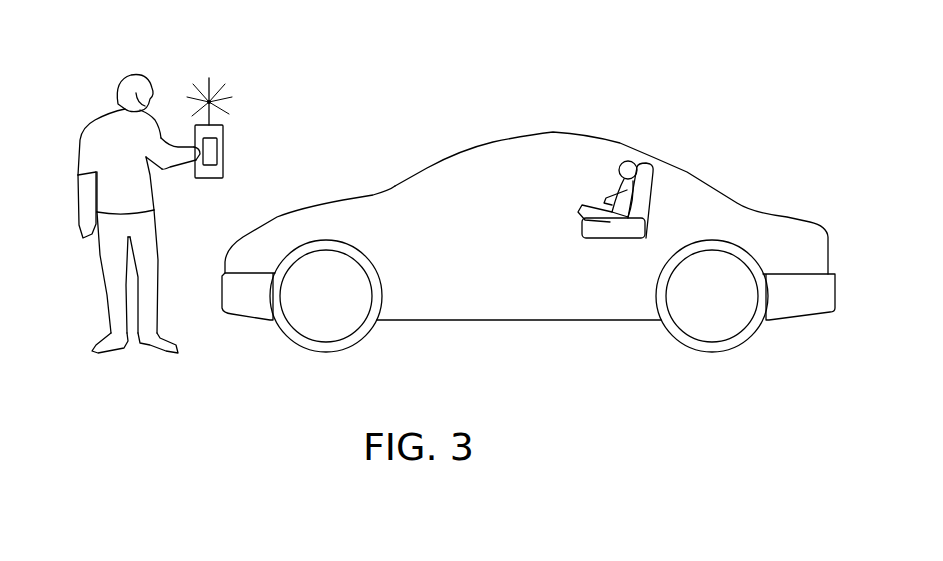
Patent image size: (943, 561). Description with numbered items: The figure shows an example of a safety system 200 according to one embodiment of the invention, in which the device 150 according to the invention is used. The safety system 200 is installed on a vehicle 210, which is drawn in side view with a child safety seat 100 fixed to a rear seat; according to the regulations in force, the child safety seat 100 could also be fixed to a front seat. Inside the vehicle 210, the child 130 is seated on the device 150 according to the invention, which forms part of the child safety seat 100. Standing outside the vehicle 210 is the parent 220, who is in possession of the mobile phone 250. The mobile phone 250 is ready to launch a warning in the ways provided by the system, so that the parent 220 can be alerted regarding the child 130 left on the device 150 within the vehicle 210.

The safety system 200 is at (518, 108).
The vehicle 210 is at (312, 204).
The parent 220 is at (66, 134).
The mobile phone 250 is at (224, 157).
The child safety seat 100 is at (660, 200).
The child 130 is at (632, 150).
The device 150 is at (598, 233).